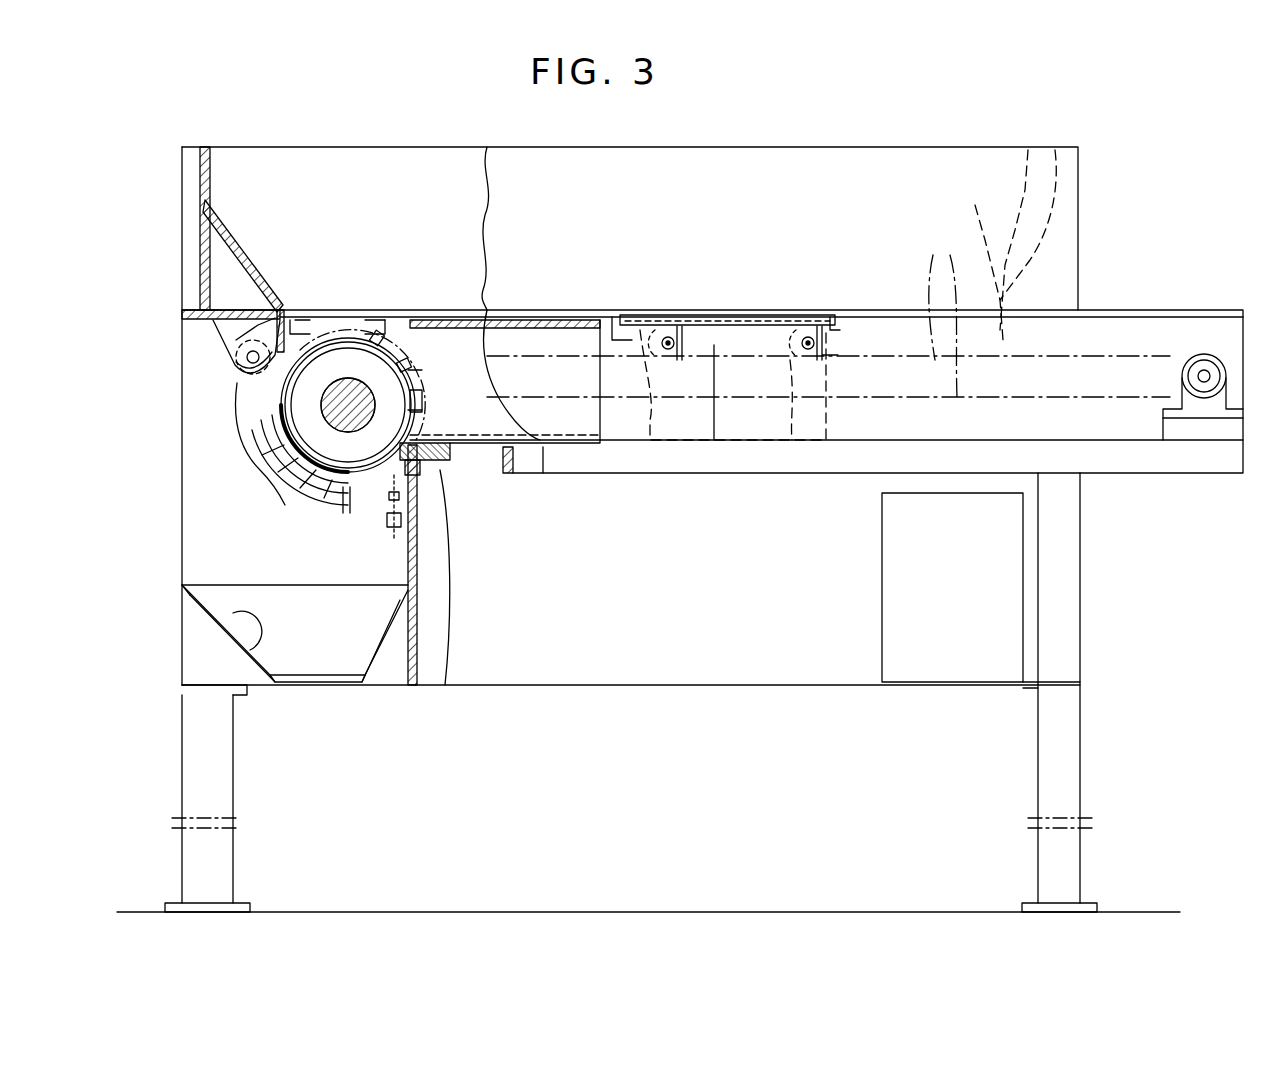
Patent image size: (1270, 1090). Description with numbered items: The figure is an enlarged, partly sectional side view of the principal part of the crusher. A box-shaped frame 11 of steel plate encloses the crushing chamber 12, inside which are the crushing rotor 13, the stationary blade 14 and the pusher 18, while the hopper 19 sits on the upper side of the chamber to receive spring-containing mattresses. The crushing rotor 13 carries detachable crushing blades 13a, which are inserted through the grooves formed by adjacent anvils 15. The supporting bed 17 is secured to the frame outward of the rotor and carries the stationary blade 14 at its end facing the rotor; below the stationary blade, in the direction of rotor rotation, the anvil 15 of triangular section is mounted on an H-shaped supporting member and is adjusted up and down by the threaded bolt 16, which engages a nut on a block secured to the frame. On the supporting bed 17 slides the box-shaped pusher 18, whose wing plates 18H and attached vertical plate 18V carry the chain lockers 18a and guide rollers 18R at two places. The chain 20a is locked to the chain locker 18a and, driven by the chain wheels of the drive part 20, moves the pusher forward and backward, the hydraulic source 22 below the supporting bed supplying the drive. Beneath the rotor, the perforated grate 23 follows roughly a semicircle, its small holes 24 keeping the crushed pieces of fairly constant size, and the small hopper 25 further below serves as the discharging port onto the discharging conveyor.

The frame 11 is at (180, 362).
The crushing chamber 12 is at (350, 328).
The crushing rotor 13 is at (330, 322).
The crushing blade 13a is at (395, 355).
The stationary blade 14 is at (440, 475).
The anvil 15 is at (383, 487).
The threaded bolt 16 is at (397, 538).
The supporting bed 17 is at (507, 478).
The pusher 18 is at (452, 372).
The wing plate 18H is at (698, 312).
The guide roller 18R is at (797, 522).
The vertical plate 18V is at (713, 345).
The chain locker 18a is at (825, 345).
The hopper 19 is at (238, 235).
The drive part 20 is at (1207, 350).
The chain 20a is at (931, 310).
The hydraulic source 22 is at (975, 592).
The grate 23 is at (262, 440).
The small holes 24 is at (390, 490).
The small hopper 25 is at (233, 613).